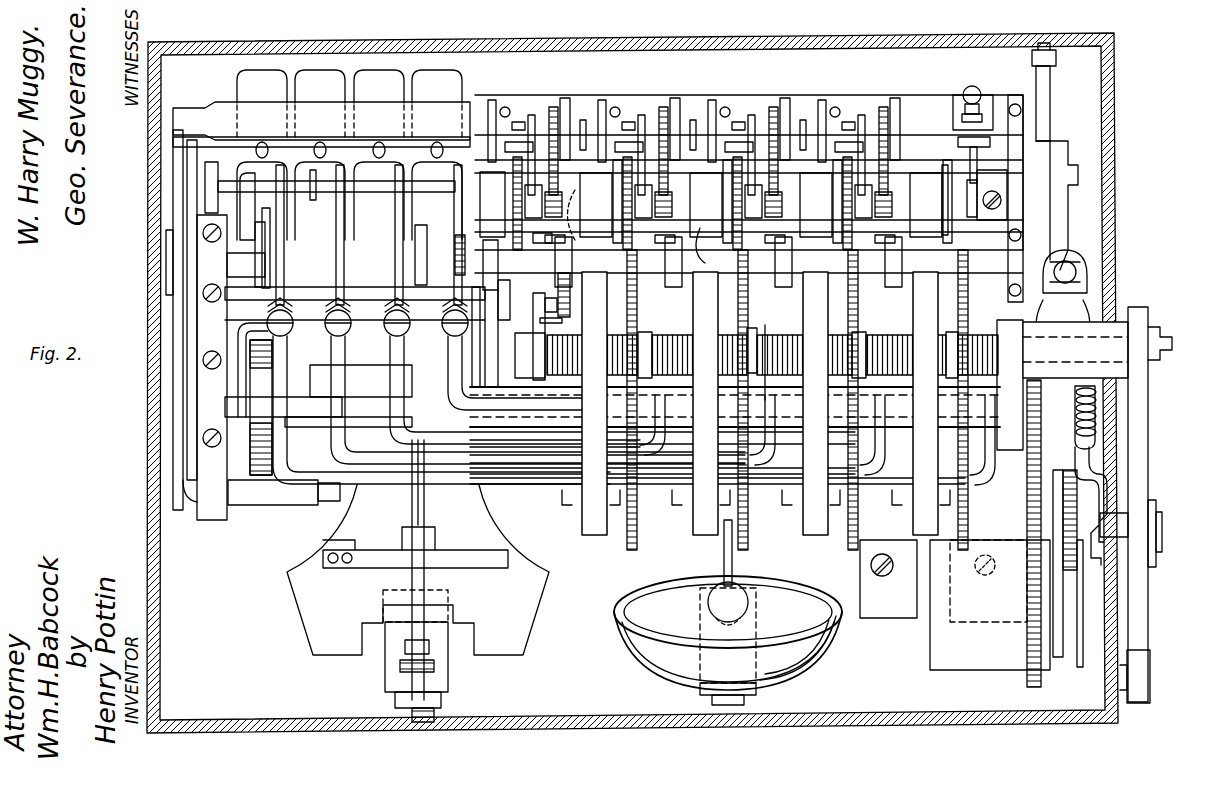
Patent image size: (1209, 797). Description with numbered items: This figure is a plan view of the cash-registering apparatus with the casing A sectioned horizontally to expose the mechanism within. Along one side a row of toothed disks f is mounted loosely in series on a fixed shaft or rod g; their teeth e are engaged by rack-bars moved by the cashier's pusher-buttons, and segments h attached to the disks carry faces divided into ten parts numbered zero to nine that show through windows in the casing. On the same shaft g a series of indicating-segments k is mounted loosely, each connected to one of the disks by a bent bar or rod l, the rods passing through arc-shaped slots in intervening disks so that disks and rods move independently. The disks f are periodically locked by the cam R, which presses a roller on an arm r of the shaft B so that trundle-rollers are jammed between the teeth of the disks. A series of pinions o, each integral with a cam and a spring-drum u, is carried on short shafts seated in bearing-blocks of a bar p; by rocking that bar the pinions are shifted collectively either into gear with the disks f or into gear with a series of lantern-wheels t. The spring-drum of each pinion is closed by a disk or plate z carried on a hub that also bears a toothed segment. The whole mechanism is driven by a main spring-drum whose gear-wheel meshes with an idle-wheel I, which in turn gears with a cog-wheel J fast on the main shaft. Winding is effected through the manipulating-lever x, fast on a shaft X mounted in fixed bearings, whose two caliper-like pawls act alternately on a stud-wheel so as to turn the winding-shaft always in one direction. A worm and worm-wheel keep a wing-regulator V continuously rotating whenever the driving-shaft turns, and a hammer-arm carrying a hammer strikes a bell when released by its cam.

The casing A is at (688, 40).
The indicating-segment k is at (305, 68).
The shutter v is at (321, 124).
The cam s is at (676, 262).
The lantern-wheel t is at (528, 105).
The spring-drum u is at (761, 191).
The short shaft O is at (590, 240).
The pinion o is at (767, 237).
The disk or plate z is at (796, 203).
The bar p is at (985, 175).
The cog-wheel J is at (1040, 218).
The cam R is at (545, 327).
The arm r is at (530, 320).
The shaft B is at (660, 345).
The teeth e is at (745, 498).
The toothed disk f is at (636, 540).
The segment h is at (582, 518).
The bent bar or rod l is at (345, 445).
The fixed shaft or rod g is at (318, 407).
The wing-regulator V is at (418, 603).
The idle-wheel I is at (1040, 322).
The shaft X is at (1155, 335).
The manipulating-lever x is at (1145, 458).